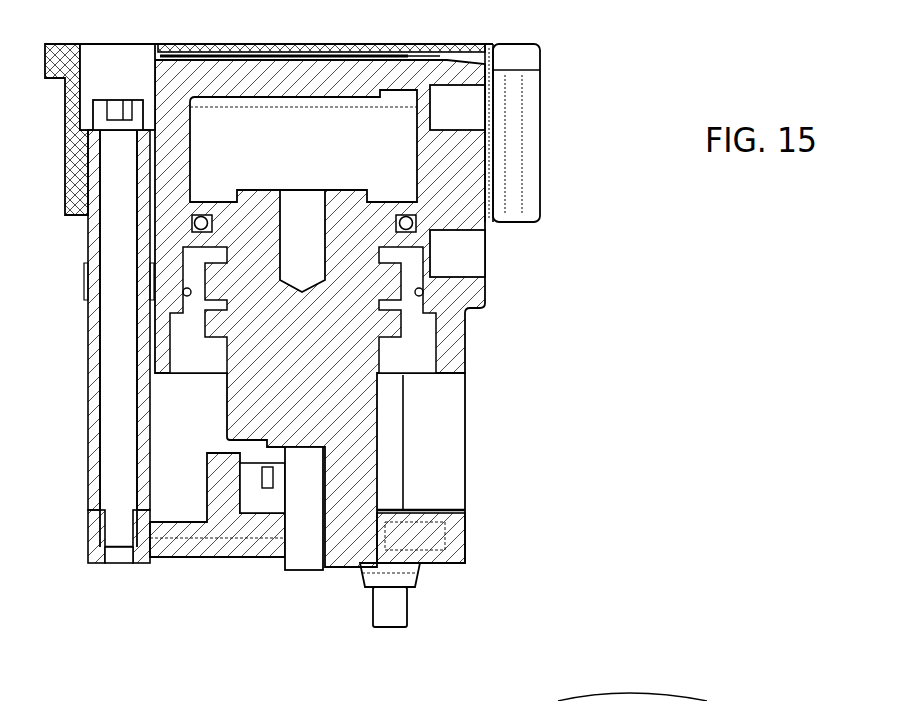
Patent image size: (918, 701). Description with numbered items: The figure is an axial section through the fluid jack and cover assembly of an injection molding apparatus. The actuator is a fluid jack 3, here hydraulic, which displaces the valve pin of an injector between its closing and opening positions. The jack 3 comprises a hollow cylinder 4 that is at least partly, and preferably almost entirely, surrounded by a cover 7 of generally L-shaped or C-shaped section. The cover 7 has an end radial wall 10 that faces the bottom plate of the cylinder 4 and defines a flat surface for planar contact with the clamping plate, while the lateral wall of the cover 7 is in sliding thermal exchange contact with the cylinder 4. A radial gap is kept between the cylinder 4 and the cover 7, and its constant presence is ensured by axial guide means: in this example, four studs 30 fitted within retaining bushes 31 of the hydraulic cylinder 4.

The end radial wall 10 is at (327, 44).
The stud 30 is at (140, 100).
The retaining bush 31 is at (87, 232).
The cover 7 is at (542, 157).
The cylinder 4 is at (484, 288).
The fluid jack 3 is at (466, 359).